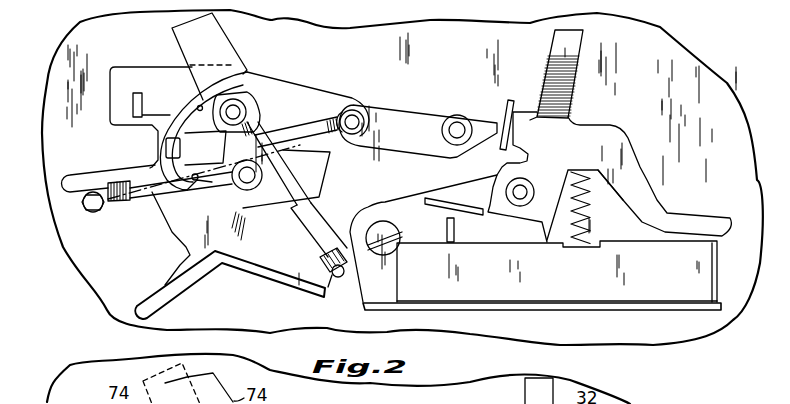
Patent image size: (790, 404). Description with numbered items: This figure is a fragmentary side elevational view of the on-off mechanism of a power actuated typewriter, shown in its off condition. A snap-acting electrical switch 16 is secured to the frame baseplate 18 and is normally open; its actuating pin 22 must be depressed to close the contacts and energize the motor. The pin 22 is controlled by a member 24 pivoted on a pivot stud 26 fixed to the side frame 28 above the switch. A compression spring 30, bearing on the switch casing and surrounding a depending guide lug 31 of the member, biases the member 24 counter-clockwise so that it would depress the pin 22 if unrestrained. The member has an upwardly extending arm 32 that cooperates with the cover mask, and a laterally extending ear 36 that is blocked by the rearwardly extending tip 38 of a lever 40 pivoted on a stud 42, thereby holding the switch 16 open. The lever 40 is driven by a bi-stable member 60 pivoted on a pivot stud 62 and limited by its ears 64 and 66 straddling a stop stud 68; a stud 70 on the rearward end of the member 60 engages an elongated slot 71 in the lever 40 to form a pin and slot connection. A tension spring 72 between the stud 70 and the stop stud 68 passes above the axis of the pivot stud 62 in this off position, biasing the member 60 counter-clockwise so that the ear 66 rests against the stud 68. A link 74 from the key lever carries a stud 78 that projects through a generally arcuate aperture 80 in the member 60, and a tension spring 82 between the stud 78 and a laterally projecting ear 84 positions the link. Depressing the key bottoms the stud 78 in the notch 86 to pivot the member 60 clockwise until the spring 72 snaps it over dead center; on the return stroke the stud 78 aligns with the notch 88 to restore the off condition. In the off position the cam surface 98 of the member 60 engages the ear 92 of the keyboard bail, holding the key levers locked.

The snap-acting electrical switch 16 is at (562, 280).
The frame baseplate 18 is at (581, 307).
The actuating pin 22 is at (458, 225).
The member 24 is at (597, 139).
The pivot stud 26 is at (530, 188).
The side frame 28 is at (703, 87).
The compression spring 30 is at (587, 218).
The guide lug 31 is at (590, 193).
The upwardly extending arm 32 is at (567, 67).
The laterally extending ear 36 is at (507, 120).
The rearwardly extending tip 38 is at (497, 152).
The lever 40 is at (428, 115).
The stud 42 is at (467, 102).
The bi-stable member 60 is at (220, 247).
The pivot stud 62 is at (242, 185).
The ear 64 is at (163, 287).
The ear 66 is at (115, 160).
The stop stud 68 is at (95, 213).
The stud 70 is at (355, 110).
The elongated slot 71 is at (368, 125).
The tension spring 72 is at (143, 201).
The link 74 is at (208, 48).
The stud 78 is at (250, 108).
The arcuate aperture 80 is at (198, 105).
The tension spring 82 is at (292, 218).
The laterally projecting ear 84 is at (333, 308).
The notch 86 is at (265, 120).
The notch 88 is at (200, 180).
The ear 92 is at (182, 137).
The cam surface 98 is at (163, 142).